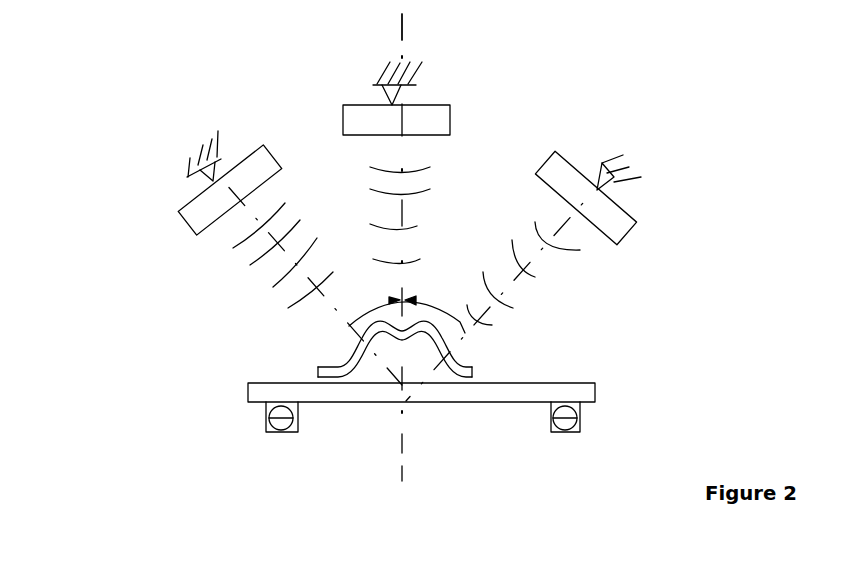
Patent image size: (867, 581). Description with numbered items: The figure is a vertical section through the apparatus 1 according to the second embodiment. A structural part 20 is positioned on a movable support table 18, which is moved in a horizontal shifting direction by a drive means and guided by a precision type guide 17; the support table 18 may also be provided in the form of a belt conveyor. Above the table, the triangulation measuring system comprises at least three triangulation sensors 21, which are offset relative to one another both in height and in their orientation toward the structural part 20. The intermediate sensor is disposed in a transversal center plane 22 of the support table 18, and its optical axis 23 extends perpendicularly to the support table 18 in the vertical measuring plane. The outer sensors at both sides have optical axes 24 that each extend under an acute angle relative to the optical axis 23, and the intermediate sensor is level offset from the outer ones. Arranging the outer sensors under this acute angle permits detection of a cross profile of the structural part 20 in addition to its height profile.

The apparatus 1 is at (160, 415).
The precision type guide 17 is at (283, 432).
The movable support table 18 is at (581, 383).
The structural part 20 is at (445, 350).
The triangulation sensors 21 is at (450, 118).
The transversal center plane 22 is at (404, 28).
The optical axis 23 is at (402, 225).
The optical axes 24 is at (233, 250).